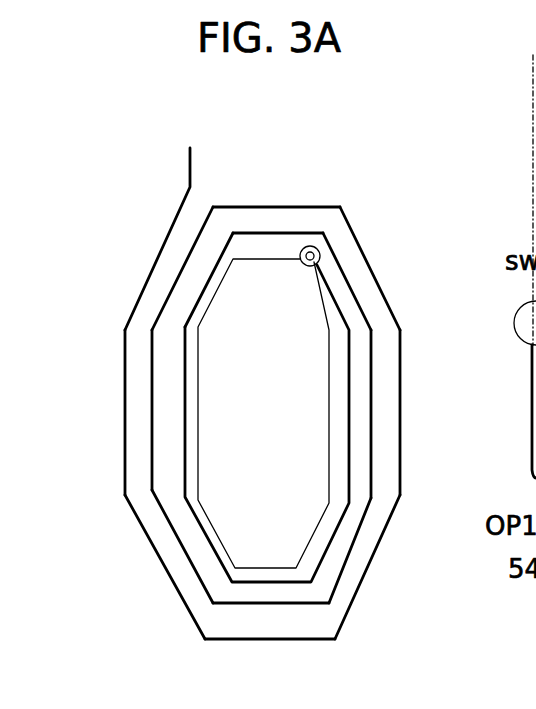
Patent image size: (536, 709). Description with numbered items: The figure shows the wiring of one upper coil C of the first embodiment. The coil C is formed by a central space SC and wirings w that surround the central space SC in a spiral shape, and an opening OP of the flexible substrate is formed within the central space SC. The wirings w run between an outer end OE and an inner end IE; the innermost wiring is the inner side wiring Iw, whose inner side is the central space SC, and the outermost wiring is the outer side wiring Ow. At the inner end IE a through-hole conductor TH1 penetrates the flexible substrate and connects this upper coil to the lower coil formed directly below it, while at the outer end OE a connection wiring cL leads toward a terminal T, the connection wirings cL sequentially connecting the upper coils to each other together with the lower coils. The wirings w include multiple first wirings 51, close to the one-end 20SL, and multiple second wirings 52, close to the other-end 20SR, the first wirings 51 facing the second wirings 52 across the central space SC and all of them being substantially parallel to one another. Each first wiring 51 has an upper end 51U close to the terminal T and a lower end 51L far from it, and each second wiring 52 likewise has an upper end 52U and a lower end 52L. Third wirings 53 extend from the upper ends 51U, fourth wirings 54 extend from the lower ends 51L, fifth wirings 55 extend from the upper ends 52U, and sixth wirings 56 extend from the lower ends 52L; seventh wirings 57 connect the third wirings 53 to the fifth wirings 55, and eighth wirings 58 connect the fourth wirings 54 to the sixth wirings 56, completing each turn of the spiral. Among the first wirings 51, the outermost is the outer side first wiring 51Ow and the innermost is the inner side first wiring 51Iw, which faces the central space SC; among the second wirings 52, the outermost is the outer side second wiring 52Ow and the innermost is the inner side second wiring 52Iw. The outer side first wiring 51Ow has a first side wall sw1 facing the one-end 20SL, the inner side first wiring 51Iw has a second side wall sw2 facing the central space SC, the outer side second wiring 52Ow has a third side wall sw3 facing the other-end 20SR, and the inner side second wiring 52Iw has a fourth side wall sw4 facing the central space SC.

The first wirings 51 is at (152, 432).
The second wirings 52 is at (372, 424).
The third wirings 53 is at (200, 291).
The fourth wirings 54 is at (182, 547).
The fifth wirings 55 is at (372, 298).
The sixth wirings 56 is at (370, 535).
The seventh wirings 57 is at (247, 228).
The eighth wirings 58 is at (275, 578).
The upper end of first wiring 51U is at (125, 336).
The lower end of first wiring 51L is at (125, 502).
The upper end of second wiring 52U is at (402, 332).
The lower end of second wiring 52L is at (402, 506).
The inner side first wiring 51Iw is at (198, 385).
The inner side second wiring 52Iw is at (350, 440).
The outer side first wiring 51Ow is at (125, 458).
The outer side second wiring 52Ow is at (402, 468).
The one-end 20SL is at (37, 393).
The other-end 20SR is at (459, 381).
The first side wall sw1 is at (127, 355).
The second side wall sw2 is at (200, 358).
The third side wall sw3 is at (403, 358).
The fourth side wall sw4 is at (348, 376).
The connection wiring cL is at (190, 146).
The terminal T is at (188, 127).
The outer end OE is at (188, 186).
The inner end IE is at (330, 232).
The through-hole conductor TH1 is at (310, 250).
The wirings w is at (355, 224).
The inner side wiring Iw is at (322, 548).
The outer side wiring Ow is at (343, 622).
The opening OP is at (300, 590).
The central space SC is at (308, 572).
The coil C is at (360, 592).